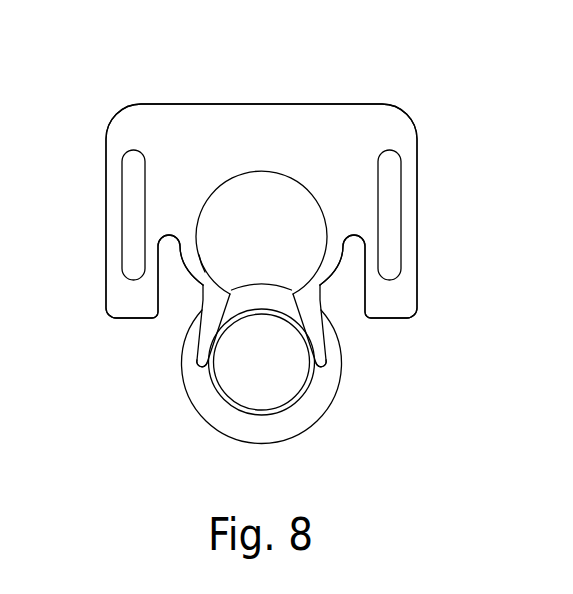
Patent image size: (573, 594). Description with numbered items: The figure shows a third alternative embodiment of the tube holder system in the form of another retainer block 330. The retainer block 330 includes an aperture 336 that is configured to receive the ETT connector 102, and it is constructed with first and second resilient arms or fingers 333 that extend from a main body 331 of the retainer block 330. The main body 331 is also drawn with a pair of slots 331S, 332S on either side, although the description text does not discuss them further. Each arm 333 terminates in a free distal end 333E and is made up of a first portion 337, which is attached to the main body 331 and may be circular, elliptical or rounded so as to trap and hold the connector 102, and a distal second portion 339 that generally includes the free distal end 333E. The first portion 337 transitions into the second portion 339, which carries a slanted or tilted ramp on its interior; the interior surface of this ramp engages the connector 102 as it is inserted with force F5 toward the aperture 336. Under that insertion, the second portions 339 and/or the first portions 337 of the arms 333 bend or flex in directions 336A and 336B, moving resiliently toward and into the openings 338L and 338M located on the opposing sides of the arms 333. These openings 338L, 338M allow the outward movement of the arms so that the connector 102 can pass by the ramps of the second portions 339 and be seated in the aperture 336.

The retainer block 330 is at (131, 87).
The main body 331 is at (318, 148).
The first strap slot 331S is at (132, 173).
The second strap slot 332S is at (387, 180).
The aperture 336 is at (221, 192).
The first portion 337 is at (205, 261).
The resilient arms 333 is at (310, 273).
The second portion 339 is at (228, 303).
The opening 338L is at (199, 302).
The opening 338M is at (358, 302).
The flex direction 336A is at (200, 355).
The flex direction 336B is at (323, 355).
The free distal end 333E is at (203, 368).
The ETT connector 102 is at (305, 397).
The insertion force F5 is at (262, 322).